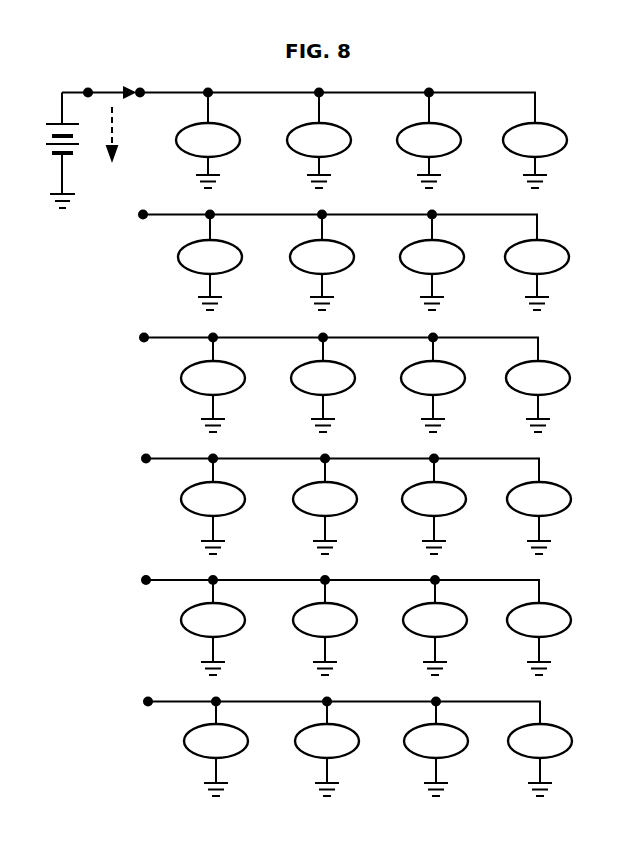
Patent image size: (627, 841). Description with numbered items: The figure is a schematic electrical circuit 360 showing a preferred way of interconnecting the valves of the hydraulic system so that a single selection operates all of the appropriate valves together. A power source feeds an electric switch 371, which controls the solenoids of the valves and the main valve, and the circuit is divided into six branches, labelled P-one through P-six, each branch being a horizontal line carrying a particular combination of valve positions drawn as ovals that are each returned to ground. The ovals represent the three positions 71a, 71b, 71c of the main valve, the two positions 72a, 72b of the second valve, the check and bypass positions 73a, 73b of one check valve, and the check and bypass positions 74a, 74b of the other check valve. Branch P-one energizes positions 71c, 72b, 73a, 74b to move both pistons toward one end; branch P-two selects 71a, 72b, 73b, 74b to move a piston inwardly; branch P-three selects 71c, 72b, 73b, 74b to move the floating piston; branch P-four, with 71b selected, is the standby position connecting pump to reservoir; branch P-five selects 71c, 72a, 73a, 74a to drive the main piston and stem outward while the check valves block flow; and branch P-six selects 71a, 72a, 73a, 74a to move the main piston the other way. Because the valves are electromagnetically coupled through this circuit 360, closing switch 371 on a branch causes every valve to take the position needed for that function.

The circuit 360 is at (125, 485).
The electric switch 371 is at (112, 83).
The valve position 71a is at (210, 261).
The valve position 71b is at (213, 505).
The valve position 71c is at (208, 139).
The valve position 72a is at (325, 505).
The valve position 72b is at (319, 139).
The check position 73a is at (434, 505).
The bypass position 73b is at (429, 139).
The check position 74a is at (539, 518).
The bypass position 74b is at (535, 155).